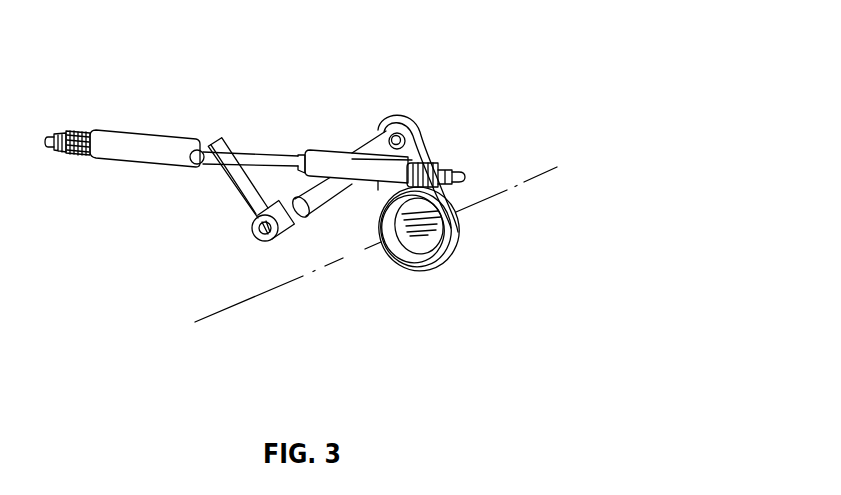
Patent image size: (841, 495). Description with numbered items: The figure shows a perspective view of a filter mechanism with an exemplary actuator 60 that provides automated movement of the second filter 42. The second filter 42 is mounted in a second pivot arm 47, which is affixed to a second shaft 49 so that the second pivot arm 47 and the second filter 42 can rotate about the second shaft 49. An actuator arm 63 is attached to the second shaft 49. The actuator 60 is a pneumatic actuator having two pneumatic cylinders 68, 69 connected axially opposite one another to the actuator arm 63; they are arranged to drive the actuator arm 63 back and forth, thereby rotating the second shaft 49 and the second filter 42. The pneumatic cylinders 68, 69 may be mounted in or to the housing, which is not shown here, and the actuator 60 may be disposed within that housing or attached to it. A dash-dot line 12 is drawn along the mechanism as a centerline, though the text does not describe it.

The actuator 60 is at (472, 65).
The axis of rotation 12 is at (223, 308).
The pneumatic cylinder 68 is at (125, 143).
The pneumatic cylinder 69 is at (347, 163).
The actuator arm 63 is at (250, 178).
The second shaft 49 is at (325, 193).
The second pivot arm 47 is at (460, 236).
The second filter 42 is at (427, 247).